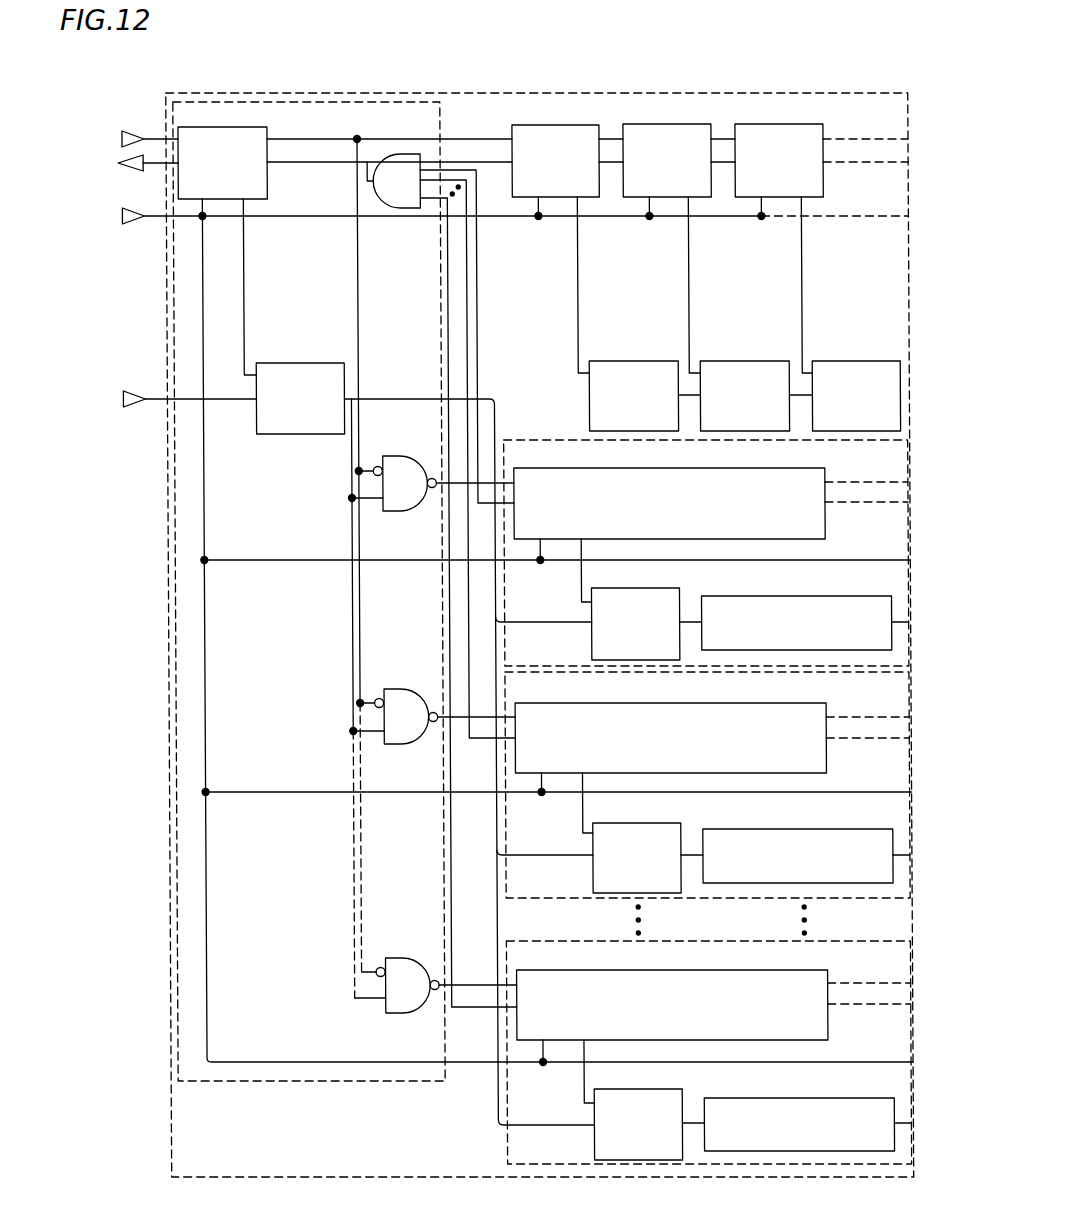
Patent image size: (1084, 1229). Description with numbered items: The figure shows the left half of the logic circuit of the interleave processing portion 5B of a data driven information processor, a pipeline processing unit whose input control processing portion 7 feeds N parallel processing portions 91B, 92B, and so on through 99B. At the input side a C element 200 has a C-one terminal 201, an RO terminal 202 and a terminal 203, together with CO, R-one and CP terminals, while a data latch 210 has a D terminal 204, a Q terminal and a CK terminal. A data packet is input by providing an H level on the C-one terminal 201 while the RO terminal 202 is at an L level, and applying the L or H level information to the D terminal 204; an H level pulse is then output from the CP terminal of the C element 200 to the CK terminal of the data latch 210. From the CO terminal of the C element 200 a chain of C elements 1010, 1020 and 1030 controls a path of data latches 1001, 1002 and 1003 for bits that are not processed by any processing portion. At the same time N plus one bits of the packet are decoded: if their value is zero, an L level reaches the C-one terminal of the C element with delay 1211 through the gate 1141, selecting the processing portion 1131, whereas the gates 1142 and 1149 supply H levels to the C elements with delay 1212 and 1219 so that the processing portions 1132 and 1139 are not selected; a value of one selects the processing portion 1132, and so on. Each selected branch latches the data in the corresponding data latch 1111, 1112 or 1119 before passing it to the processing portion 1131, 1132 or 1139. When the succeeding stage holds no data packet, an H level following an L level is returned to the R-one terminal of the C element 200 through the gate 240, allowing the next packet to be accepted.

The input control processing portion 7 is at (293, 100).
The interleave processing portion 5B is at (375, 102).
The C element 200 is at (545, 583).
The C1 terminal 201 is at (133, 130).
The RO terminal 202 is at (133, 175).
The MR input terminal 203 is at (494, 231).
The D terminal 204 is at (142, 388).
The data latch 210 is at (425, 731).
The logic gate 240 is at (445, 573).
The C element 1010 is at (568, 238).
The C element 1020 is at (679, 237).
The C element 1030 is at (822, 237).
The data latch 1001 is at (645, 384).
The data latch 1002 is at (756, 384).
The data latch 1003 is at (856, 384).
The logic gate 1141 is at (433, 470).
The logic gate 1142 is at (434, 704).
The logic gate 1149 is at (435, 973).
The C element with delay 1211 is at (711, 523).
The C element with delay 1212 is at (712, 756).
The C element with delay 1219 is at (713, 1024).
The data latch 1111 is at (646, 612).
The data latch 1112 is at (648, 846).
The data latch 1119 is at (649, 1113).
The processing portion 1131 is at (804, 610).
The processing portion 1132 is at (806, 844).
The processing portion 1139 is at (807, 1112).
The processing portion 91B is at (845, 440).
The processing portion 92B is at (845, 672).
The processing portion 99B is at (845, 942).